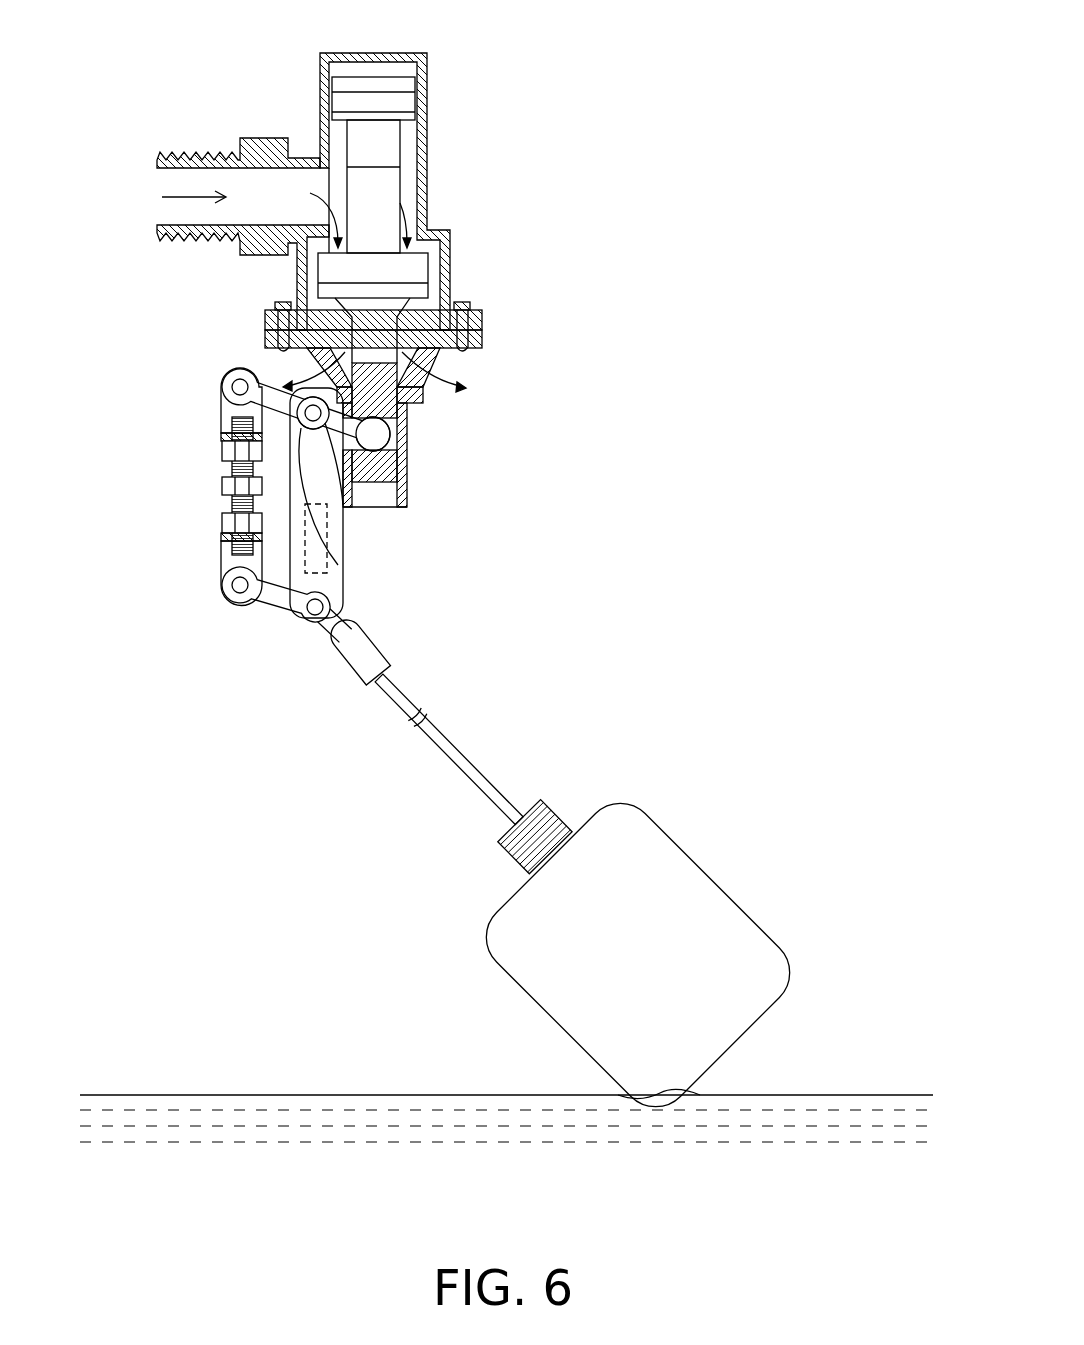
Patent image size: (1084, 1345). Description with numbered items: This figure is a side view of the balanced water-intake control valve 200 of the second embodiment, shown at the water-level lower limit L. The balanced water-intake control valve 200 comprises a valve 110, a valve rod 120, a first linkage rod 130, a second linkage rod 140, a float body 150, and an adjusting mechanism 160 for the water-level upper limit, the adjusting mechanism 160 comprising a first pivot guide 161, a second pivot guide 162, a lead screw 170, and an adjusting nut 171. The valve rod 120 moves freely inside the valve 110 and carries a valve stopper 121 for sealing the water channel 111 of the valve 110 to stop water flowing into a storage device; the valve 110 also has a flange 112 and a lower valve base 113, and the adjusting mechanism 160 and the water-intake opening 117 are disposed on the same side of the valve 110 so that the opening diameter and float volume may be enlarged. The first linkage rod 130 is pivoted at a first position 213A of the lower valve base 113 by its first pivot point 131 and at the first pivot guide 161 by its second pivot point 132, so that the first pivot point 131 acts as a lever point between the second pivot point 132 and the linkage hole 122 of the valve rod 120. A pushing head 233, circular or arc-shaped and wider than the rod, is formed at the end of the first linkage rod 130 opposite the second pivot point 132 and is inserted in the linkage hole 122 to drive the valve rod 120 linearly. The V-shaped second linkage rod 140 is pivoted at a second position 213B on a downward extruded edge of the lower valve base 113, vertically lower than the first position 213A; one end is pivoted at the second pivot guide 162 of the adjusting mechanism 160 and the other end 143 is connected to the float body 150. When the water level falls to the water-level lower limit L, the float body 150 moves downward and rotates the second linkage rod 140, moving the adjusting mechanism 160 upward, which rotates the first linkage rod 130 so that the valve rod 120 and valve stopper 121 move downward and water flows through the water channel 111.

The balanced water-intake control valve 200 is at (158, 94).
The valve 110 is at (659, 288).
The water channel 111 is at (420, 130).
The flange plate 112 is at (482, 320).
The lower valve base 113 is at (482, 338).
The water-intake opening 117 is at (155, 192).
The valve rod 120 is at (407, 137).
The valve stopper 121 is at (422, 270).
The linkage hole 122 is at (400, 417).
The first linkage rod 130 is at (270, 378).
The first pivot point 131 is at (340, 568).
The second pivot point 132 is at (237, 380).
The second linkage rod 140 is at (270, 613).
The other end of the second linkage rod 143 is at (363, 678).
The float body 150 is at (743, 900).
The adjusting mechanism 160 is at (196, 371).
The first pivot guide 161 is at (225, 422).
The second pivot guide 162 is at (230, 555).
The lead screw 170 is at (232, 470).
The adjusting nut 171 is at (222, 487).
The first position 213A is at (345, 506).
The second position 213B is at (325, 610).
The pushing head 233 is at (386, 442).
The water-level lower limit L is at (825, 1094).